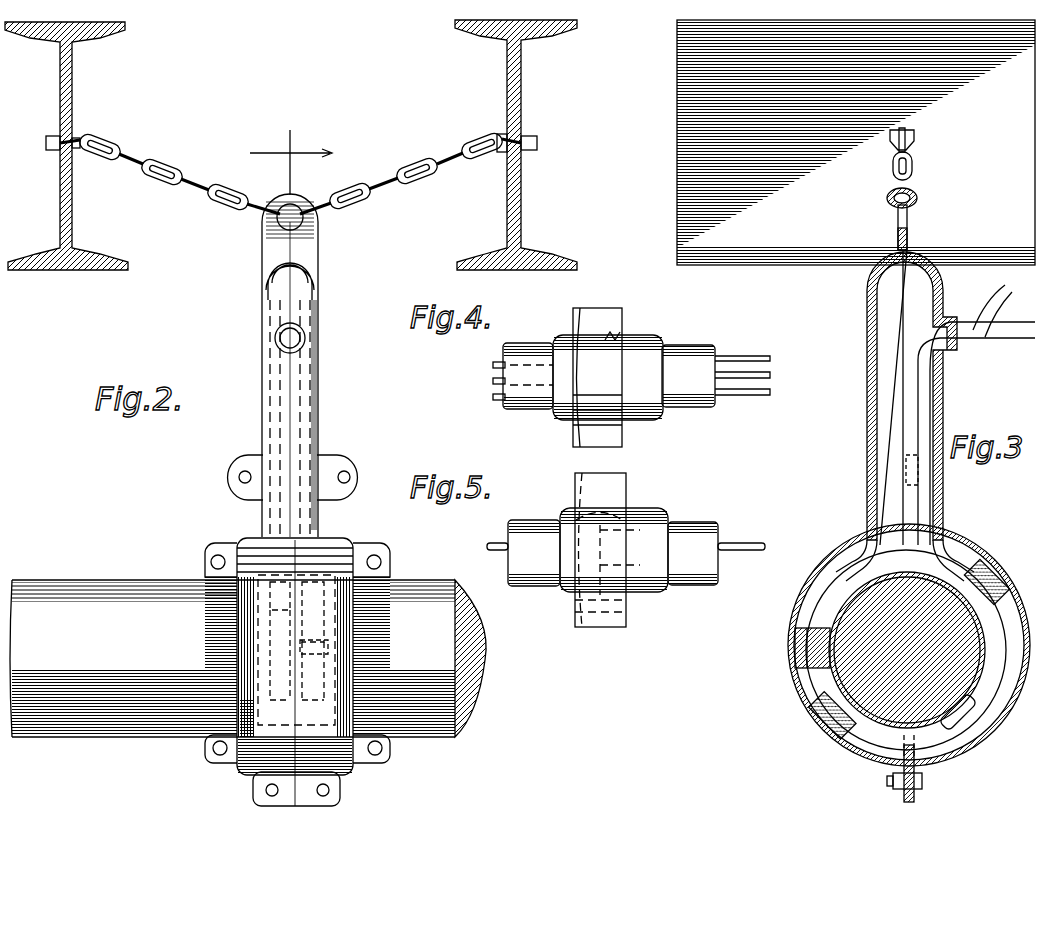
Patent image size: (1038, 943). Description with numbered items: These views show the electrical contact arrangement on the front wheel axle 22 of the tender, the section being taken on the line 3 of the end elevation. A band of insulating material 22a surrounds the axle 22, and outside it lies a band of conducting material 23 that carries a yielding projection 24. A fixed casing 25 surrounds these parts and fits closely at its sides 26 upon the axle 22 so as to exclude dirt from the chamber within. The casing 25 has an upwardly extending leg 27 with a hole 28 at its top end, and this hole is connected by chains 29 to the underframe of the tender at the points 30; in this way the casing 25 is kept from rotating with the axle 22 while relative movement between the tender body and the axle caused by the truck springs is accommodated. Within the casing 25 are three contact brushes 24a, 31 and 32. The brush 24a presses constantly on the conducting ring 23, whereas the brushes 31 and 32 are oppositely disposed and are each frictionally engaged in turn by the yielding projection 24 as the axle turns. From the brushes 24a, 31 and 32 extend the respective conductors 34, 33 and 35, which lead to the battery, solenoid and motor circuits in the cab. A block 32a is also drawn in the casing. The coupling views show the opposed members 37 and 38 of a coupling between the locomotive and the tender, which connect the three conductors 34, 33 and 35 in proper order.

In FIG. 2, the section line 3 is at (291, 150).
In FIG. 2, the front wheel axle of the tender 22 is at (248, 658).
In FIG. 3, the front wheel axle of the tender 22 is at (860, 608).
In FIG. 3, the band of insulating material 22a is at (993, 645).
In FIG. 3, the band of conducting material 23 is at (985, 668).
In FIG. 3, the yielding projection 24 is at (968, 730).
In FIG. 2, the contact brush 24a is at (318, 660).
In FIG. 3, the contact brush 24a is at (795, 648).
In FIG. 2, the fixed casing 25 is at (345, 770).
In FIG. 3, the fixed casing 25 is at (802, 600).
In FIG. 2, the sides of the casing 26 is at (378, 600).
In FIG. 2, the upwardly extending leg 27 is at (312, 376).
In FIG. 3, the upwardly extending leg 27 is at (868, 366).
In FIG. 2, the hole 28 is at (305, 226).
In FIG. 3, the hole 28 is at (910, 214).
In FIG. 2, the chains 29 is at (170, 182).
In FIG. 3, the chains 29 is at (915, 166).
In FIG. 2, the points on the underframe of the tender 30 is at (52, 152).
In FIG. 3, the points on the underframe of the tender 30 is at (912, 138).
In FIG. 2, the contact brush 31 is at (243, 766).
In FIG. 3, the contact brush 31 is at (818, 713).
In FIG. 2, the contact brush 32 is at (295, 650).
In FIG. 3, the wedge block 32a is at (990, 578).
In FIG. 4, the conductor 33 is at (500, 364).
In FIG. 3, the conductor 33 is at (900, 397).
In FIG. 4, the conductor 34 is at (500, 378).
In FIG. 3, the conductor 34 is at (905, 423).
In FIG. 4, the conductor 35 is at (500, 395).
In FIG. 3, the conductor 35 is at (920, 441).
In FIG. 4, the coupling member 37 is at (560, 414).
In FIG. 5, the coupling member 37 is at (567, 597).
In FIG. 4, the coupling member 38 is at (662, 420).
In FIG. 5, the coupling member 38 is at (648, 593).